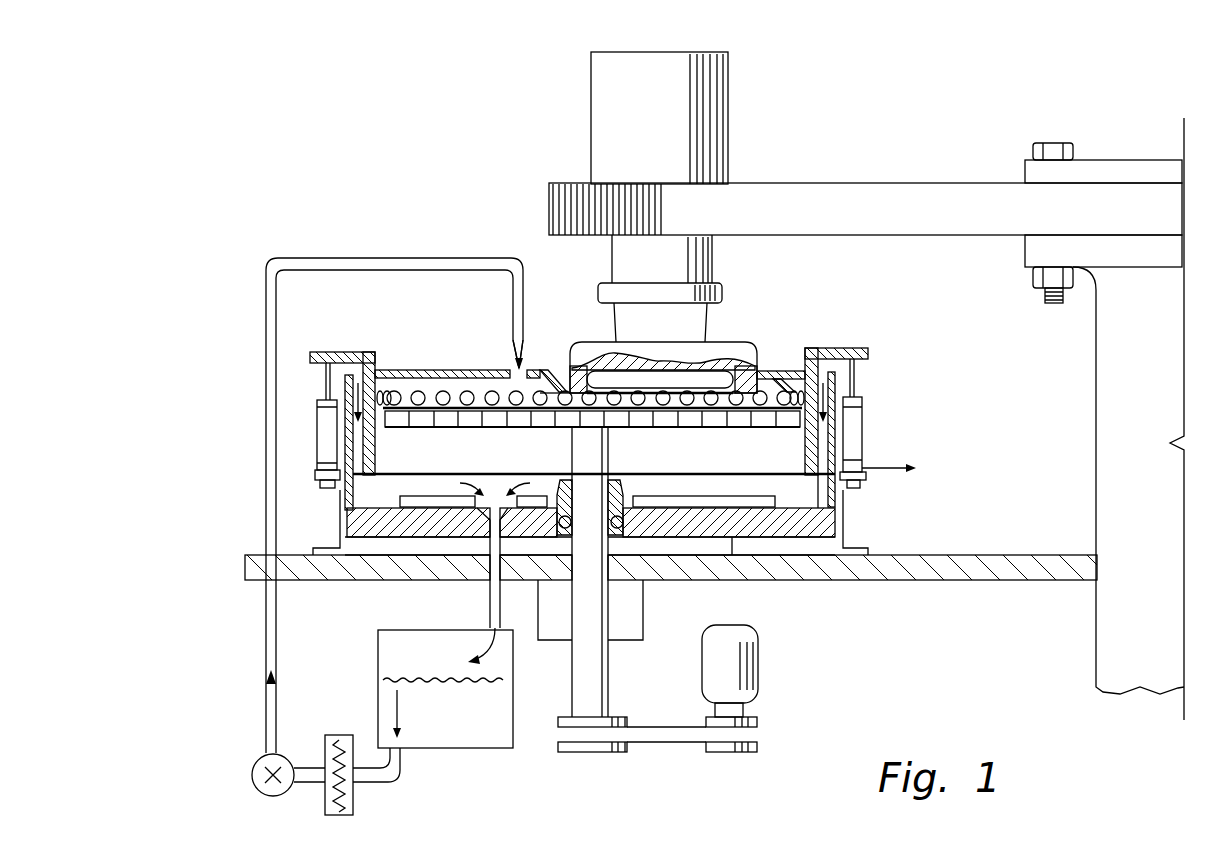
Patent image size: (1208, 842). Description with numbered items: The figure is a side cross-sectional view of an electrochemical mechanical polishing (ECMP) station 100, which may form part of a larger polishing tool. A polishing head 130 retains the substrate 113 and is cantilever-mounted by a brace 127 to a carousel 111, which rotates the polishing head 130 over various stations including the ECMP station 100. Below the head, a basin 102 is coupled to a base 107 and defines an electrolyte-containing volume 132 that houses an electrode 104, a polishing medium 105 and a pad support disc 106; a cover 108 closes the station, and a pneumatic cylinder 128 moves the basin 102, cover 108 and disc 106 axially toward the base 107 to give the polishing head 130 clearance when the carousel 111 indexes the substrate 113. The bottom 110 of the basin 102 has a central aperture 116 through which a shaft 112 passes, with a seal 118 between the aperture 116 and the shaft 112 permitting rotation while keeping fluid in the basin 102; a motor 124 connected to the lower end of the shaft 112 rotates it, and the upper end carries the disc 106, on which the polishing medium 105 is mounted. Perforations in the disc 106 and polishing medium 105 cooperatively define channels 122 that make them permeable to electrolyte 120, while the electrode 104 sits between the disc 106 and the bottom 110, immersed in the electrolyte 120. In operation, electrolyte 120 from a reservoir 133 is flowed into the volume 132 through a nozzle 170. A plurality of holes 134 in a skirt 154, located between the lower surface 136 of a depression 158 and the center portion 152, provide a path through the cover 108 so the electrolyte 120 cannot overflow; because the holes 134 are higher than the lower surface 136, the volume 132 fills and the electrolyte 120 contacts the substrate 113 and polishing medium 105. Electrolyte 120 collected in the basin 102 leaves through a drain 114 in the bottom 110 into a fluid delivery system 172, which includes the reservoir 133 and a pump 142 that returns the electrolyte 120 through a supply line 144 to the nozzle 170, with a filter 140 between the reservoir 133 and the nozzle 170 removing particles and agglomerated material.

The electrochemical mechanical polishing station 100 is at (348, 120).
The basin 102 is at (838, 509).
The electrode 104 is at (757, 497).
The polishing medium 105 is at (668, 426).
The pad support disc 106 is at (617, 424).
The base 107 is at (1000, 582).
The cover 108 is at (841, 334).
The bottom 110 is at (727, 530).
The carousel 111 is at (1093, 368).
The shaft 112 is at (612, 672).
The substrate 113 is at (712, 365).
The drain 114 is at (485, 518).
The aperture 116 is at (625, 545).
The seal 118 is at (566, 490).
The electrolyte 120 is at (507, 698).
The channels 122 is at (532, 420).
The motor 124 is at (758, 660).
The brace 127 is at (843, 183).
The pneumatic cylinder 128 is at (865, 435).
The polishing head 130 is at (742, 352).
The electrolyte-containing volume 132 is at (657, 392).
The reservoir 133 is at (382, 652).
The holes 134 is at (425, 392).
The lower surface 136 is at (766, 402).
The filter 140 is at (338, 735).
The pump 142 is at (252, 775).
The supply line 144 is at (381, 257).
The center portion 152 is at (455, 368).
The skirt 154 is at (377, 461).
The depression 158 is at (773, 373).
The nozzle 170 is at (527, 320).
The fluid delivery system 172 is at (422, 790).